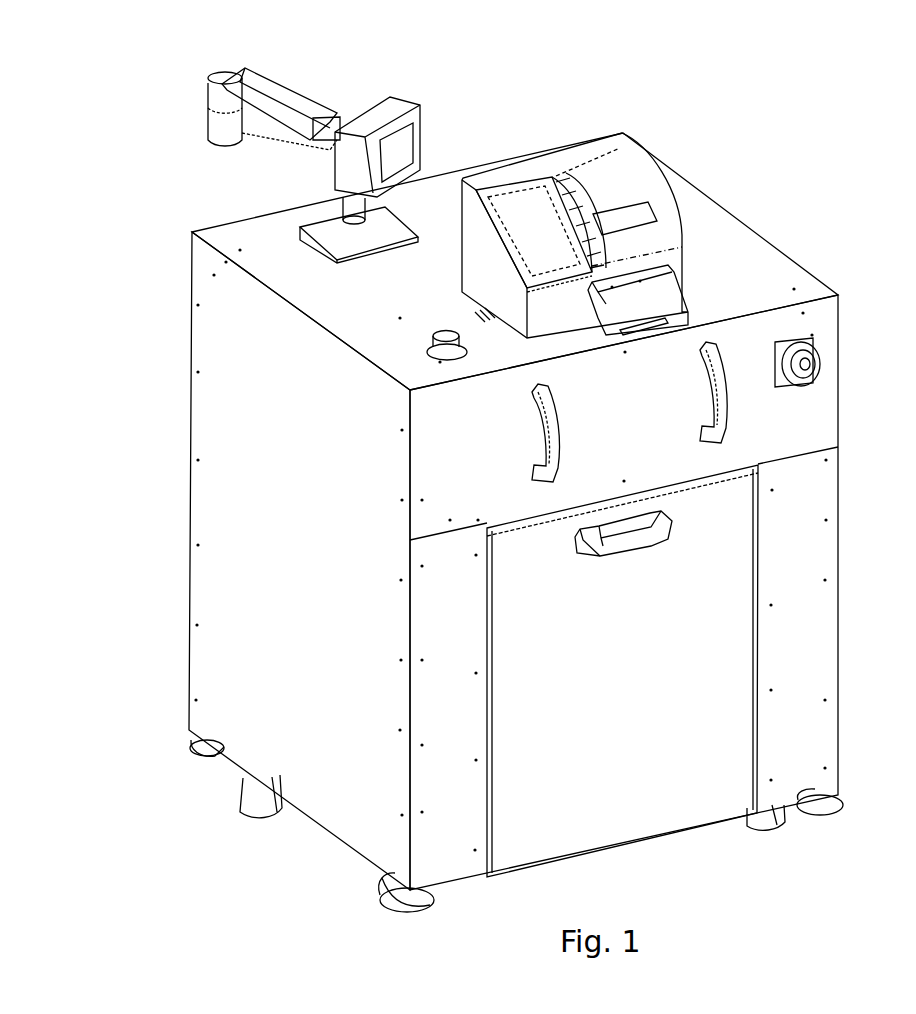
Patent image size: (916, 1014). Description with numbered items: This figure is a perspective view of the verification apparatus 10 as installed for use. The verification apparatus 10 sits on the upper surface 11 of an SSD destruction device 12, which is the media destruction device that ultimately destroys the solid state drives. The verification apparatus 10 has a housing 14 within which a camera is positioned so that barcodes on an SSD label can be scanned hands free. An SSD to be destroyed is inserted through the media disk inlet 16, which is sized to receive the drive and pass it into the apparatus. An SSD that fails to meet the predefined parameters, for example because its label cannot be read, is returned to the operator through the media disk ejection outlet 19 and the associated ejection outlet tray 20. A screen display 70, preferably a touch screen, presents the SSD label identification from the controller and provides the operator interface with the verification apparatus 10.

The verification apparatus 10 is at (685, 187).
The upper surface 11 is at (287, 255).
The SSD destruction device 12 is at (468, 522).
The housing 14 is at (685, 235).
The media disk inlet 16 is at (645, 218).
The media disk ejection outlet 19 is at (693, 313).
The ejection outlet tray 20 is at (682, 265).
The screen display 70 is at (525, 207).